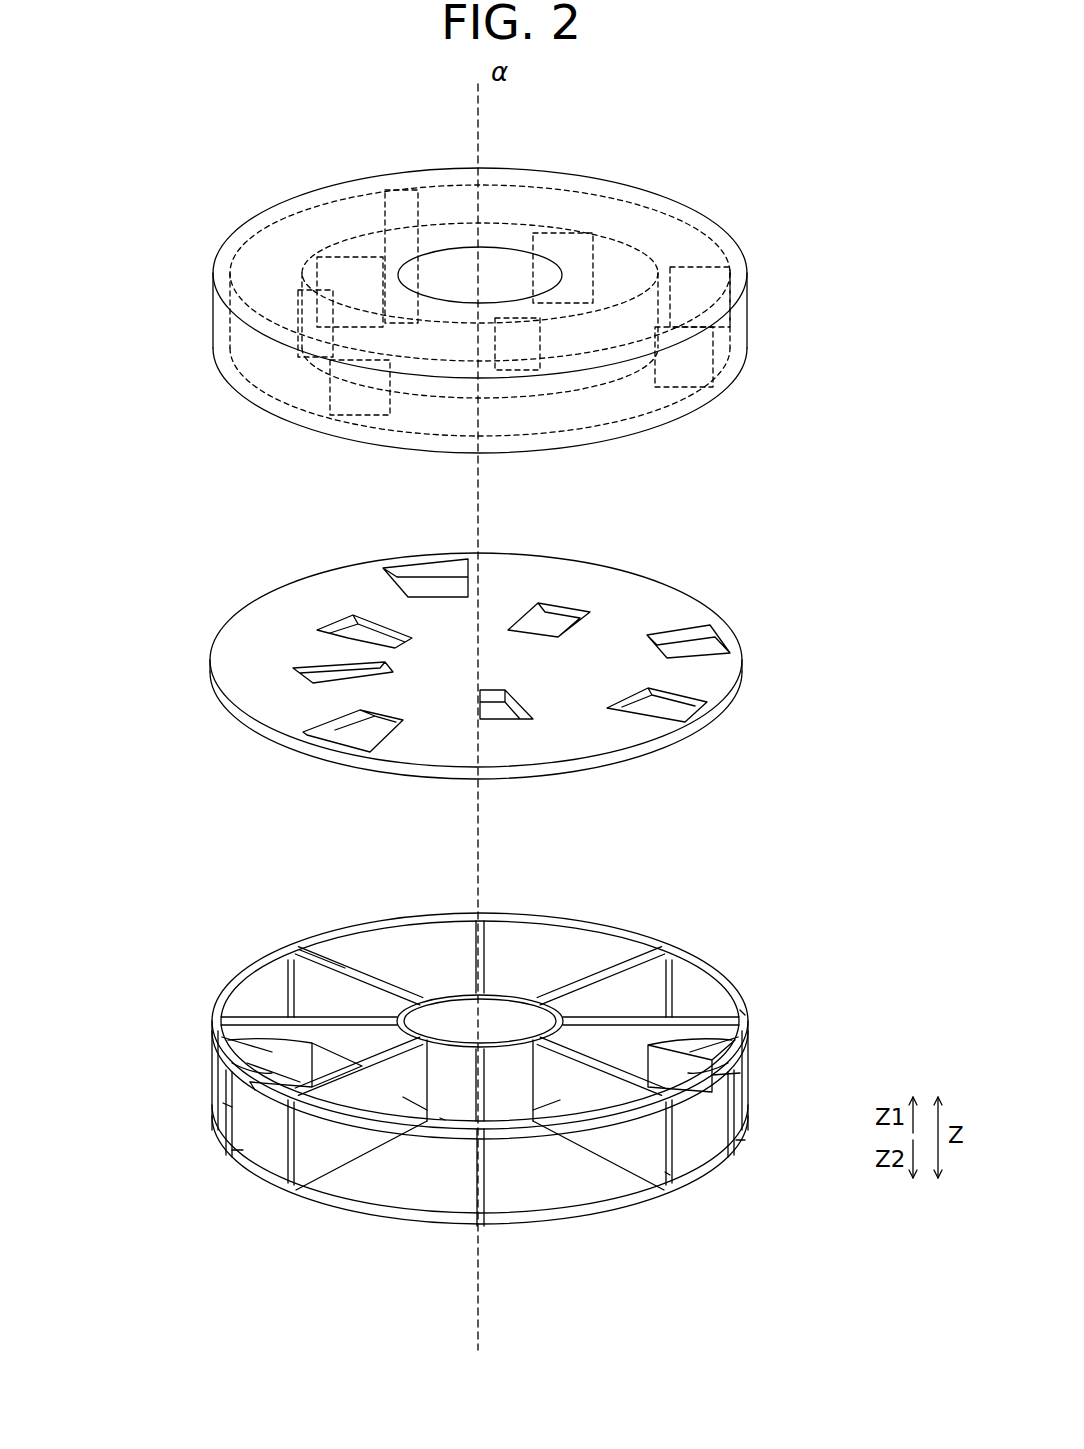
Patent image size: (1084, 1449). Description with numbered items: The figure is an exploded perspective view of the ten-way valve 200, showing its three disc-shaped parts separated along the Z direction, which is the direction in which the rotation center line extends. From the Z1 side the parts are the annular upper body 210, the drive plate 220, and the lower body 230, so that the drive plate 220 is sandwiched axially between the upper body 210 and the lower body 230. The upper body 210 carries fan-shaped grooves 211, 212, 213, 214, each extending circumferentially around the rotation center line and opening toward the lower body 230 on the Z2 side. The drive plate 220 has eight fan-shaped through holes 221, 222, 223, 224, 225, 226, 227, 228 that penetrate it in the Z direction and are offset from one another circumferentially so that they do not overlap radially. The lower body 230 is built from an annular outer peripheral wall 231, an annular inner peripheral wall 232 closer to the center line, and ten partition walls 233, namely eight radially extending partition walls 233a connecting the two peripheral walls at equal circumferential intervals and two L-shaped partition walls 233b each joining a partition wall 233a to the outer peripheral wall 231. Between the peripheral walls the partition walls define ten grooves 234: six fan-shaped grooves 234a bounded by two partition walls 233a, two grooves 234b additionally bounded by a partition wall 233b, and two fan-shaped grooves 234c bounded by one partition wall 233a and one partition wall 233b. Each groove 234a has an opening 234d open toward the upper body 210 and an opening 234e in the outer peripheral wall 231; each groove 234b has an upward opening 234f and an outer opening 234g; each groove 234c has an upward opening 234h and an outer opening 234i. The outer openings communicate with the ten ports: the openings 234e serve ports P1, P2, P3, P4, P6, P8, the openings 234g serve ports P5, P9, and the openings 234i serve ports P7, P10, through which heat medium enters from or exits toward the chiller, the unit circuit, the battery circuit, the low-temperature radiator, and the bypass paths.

The ten-way valve 200 is at (116, 120).
The upper body 210 is at (683, 205).
The groove 211 is at (722, 372).
The groove 212 is at (605, 195).
The groove 213 is at (312, 295).
The groove 214 is at (357, 240).
The drive plate 220 is at (697, 600).
The through hole 221 is at (345, 740).
The through hole 222 is at (680, 715).
The through hole 223 is at (718, 638).
The through hole 224 is at (407, 563).
The through hole 225 is at (308, 677).
The through hole 226 is at (500, 710).
The through hole 227 is at (551, 613).
The through hole 228 is at (350, 618).
The lower body 230 is at (600, 922).
The outer peripheral wall 231 is at (290, 1175).
The inner peripheral wall 232 is at (460, 1020).
The partition wall 233 is at (262, 895).
The partition wall 233a is at (345, 968).
The partition wall 233b is at (262, 1048).
The groove 234 is at (126, 870).
The groove 234a is at (403, 1097).
The groove 234b is at (347, 1040).
The groove 234c is at (255, 1087).
The opening 234d is at (440, 1118).
The opening 234e is at (245, 990).
The opening 234f is at (740, 1073).
The opening 234g is at (223, 1103).
The opening 234h is at (300, 1082).
The opening 234i is at (243, 1150).
The port P1 is at (432, 1325).
The port P2 is at (532, 1325).
The port P3 is at (578, 862).
The port P4 is at (362, 868).
The port P5 is at (102, 1150).
The port P6 is at (215, 935).
The port P7 is at (178, 1226).
The port P8 is at (815, 853).
The port P9 is at (735, 1262).
The port P10 is at (795, 1228).